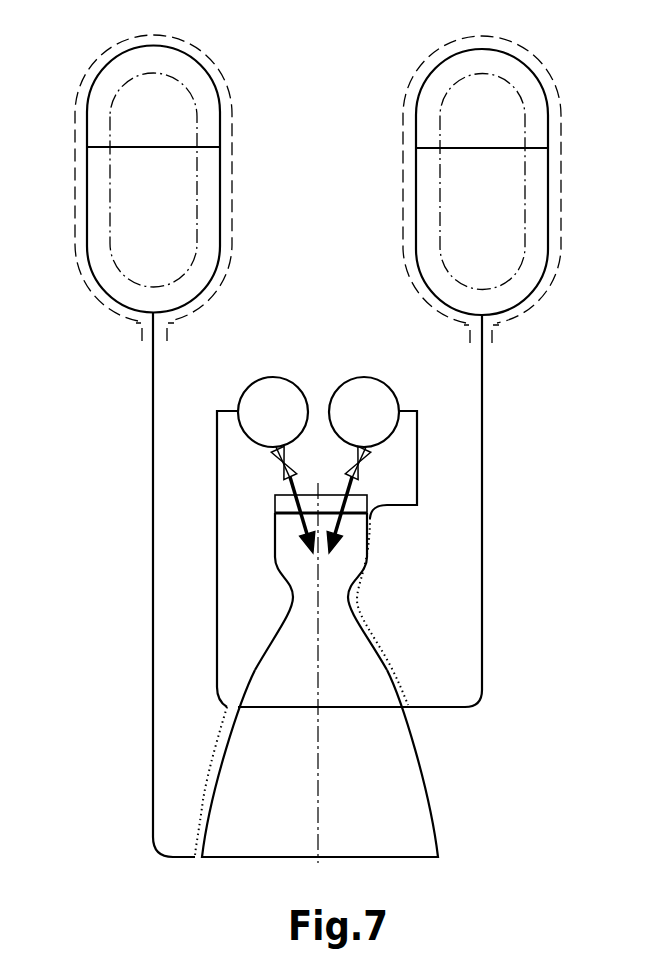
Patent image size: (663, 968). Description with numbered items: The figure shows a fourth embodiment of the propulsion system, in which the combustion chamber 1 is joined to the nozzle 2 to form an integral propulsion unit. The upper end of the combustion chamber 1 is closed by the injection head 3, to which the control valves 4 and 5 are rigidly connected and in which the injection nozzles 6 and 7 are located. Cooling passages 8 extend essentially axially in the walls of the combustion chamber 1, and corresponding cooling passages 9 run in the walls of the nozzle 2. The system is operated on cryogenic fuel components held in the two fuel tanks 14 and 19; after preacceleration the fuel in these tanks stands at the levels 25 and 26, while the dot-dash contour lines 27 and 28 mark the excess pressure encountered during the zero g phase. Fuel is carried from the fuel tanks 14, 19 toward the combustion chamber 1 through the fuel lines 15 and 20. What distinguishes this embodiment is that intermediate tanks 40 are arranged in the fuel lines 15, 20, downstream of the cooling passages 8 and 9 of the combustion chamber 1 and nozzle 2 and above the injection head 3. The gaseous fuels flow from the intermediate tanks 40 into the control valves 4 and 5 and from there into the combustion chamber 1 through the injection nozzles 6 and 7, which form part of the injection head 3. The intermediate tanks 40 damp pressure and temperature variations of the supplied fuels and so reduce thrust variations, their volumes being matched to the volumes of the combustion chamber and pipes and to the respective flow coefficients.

The combustion chamber 1 is at (350, 602).
The nozzle 2 is at (425, 760).
The injection head 3 is at (275, 500).
The control valve 4 is at (278, 467).
The control valve 5 is at (356, 467).
The injection nozzle 6 is at (277, 518).
The injection nozzle 7 is at (367, 516).
The cooling passages 8 is at (390, 662).
The cooling passages 9 is at (215, 753).
The fuel tank 14 is at (87, 228).
The fuel supply line 15 is at (151, 528).
The fuel tank 19 is at (415, 230).
The fuel line 20 is at (483, 532).
The fuel level 25 is at (148, 146).
The fuel level 26 is at (480, 147).
The dot-dash contour line 27 is at (195, 110).
The dot-dash contour line 28 is at (523, 110).
The intermediate tanks 40 is at (355, 383).